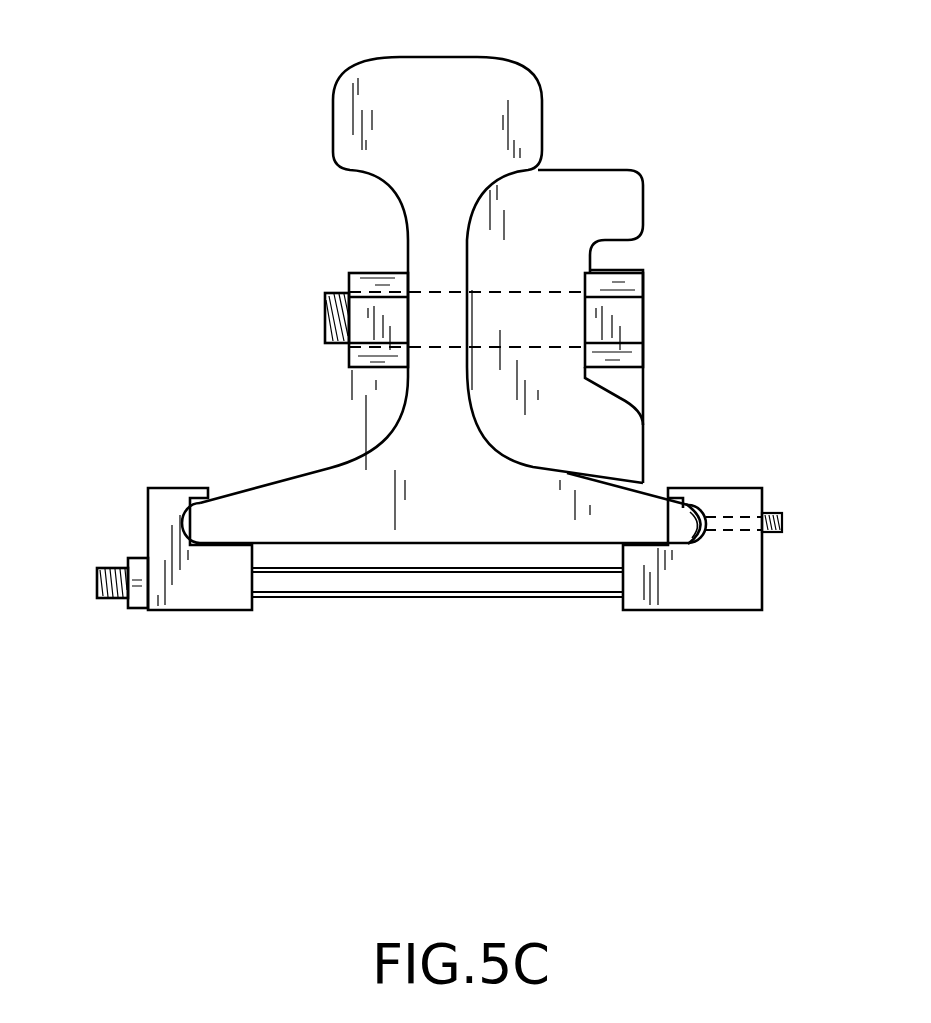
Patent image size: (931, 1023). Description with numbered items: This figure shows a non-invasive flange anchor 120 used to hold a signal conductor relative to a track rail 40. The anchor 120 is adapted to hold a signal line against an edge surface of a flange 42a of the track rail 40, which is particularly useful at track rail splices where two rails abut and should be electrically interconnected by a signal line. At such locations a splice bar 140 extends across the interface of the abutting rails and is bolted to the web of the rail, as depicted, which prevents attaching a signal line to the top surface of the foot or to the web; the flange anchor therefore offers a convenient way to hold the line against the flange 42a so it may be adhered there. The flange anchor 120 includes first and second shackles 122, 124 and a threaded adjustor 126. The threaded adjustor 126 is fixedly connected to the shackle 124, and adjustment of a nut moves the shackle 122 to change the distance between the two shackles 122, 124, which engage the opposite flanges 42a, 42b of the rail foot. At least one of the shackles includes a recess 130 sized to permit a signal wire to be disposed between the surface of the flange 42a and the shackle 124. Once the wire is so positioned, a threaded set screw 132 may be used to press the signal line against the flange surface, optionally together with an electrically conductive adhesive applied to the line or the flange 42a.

The track rail 40 is at (353, 112).
The flange 42a is at (658, 532).
The flange 42b is at (258, 532).
The splice bar 140 is at (610, 182).
The non-invasive flange anchor 120 is at (182, 612).
The first shackle 122 is at (163, 500).
The second shackle 124 is at (700, 592).
The threaded adjustor 126 is at (465, 585).
The recess 130 is at (698, 510).
The threaded set screw 132 is at (773, 512).